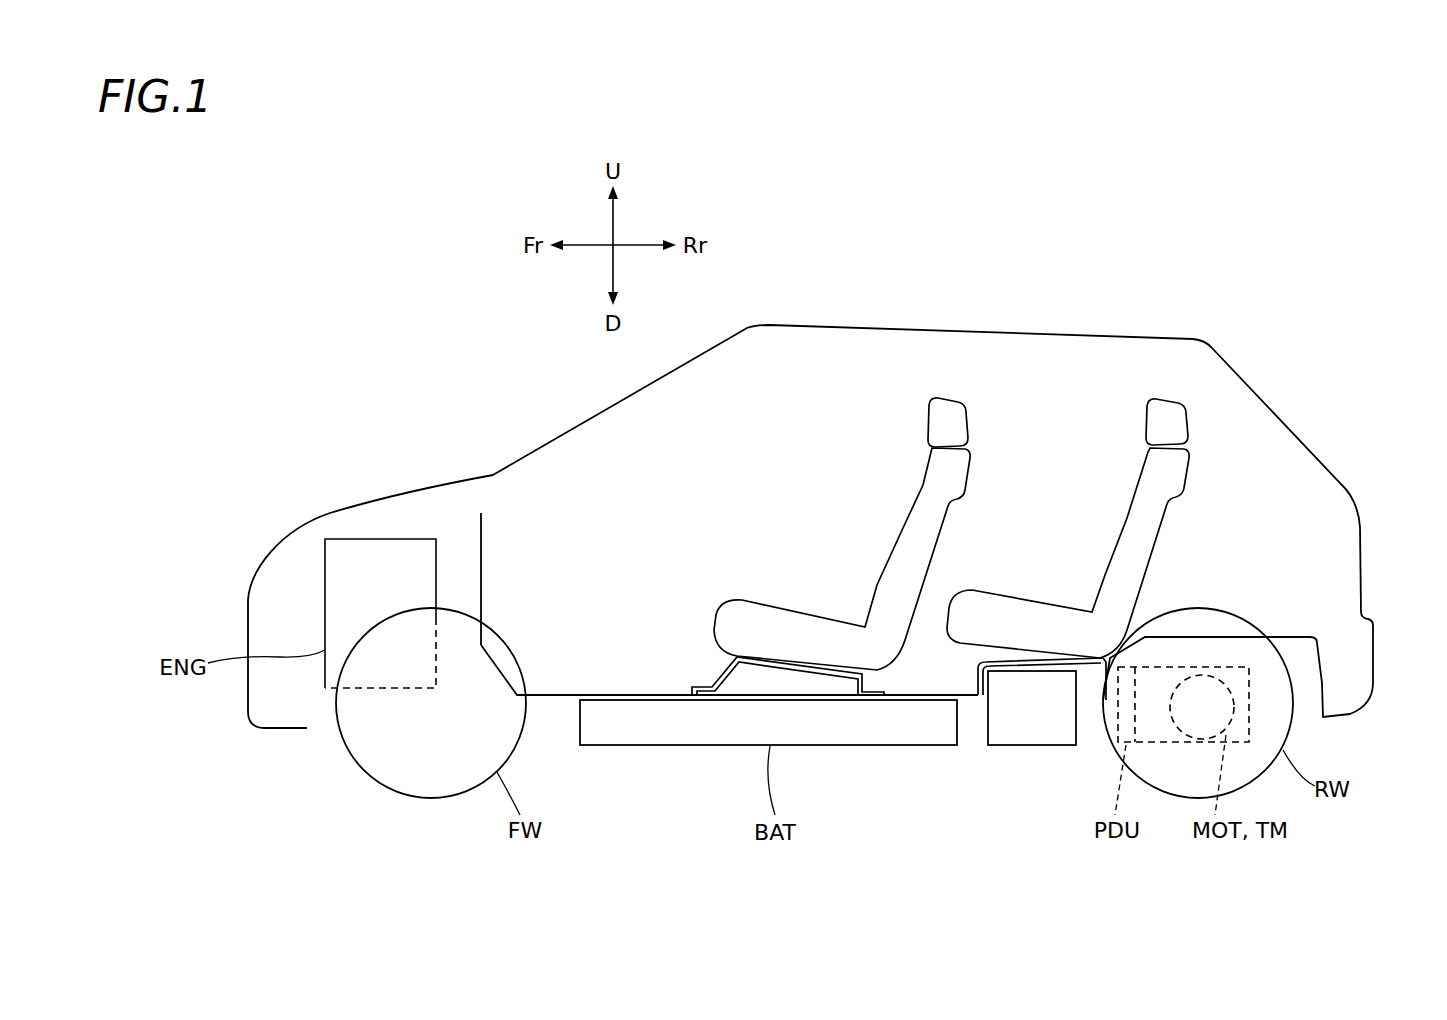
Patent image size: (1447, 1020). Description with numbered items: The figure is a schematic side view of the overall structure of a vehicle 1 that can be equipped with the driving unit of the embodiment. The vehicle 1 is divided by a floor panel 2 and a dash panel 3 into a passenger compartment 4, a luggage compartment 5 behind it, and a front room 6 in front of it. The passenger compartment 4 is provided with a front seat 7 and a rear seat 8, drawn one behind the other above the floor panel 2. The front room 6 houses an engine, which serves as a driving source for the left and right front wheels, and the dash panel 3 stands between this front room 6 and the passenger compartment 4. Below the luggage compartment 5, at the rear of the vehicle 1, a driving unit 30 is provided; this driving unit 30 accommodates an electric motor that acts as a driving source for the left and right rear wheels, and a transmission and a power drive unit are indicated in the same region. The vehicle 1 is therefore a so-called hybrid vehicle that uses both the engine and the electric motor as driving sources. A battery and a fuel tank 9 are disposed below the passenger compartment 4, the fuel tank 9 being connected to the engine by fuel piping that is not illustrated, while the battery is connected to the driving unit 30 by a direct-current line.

The vehicle 1 is at (490, 330).
The floor panel 2 is at (580, 695).
The dash panel 3 is at (485, 548).
The passenger compartment 4 is at (676, 489).
The luggage compartment 5 is at (1255, 504).
The front room 6 is at (280, 605).
The front seat 7 is at (907, 521).
The rear seat 8 is at (1127, 516).
The fuel tank 9 is at (1031, 748).
The driving unit 30 is at (1250, 678).